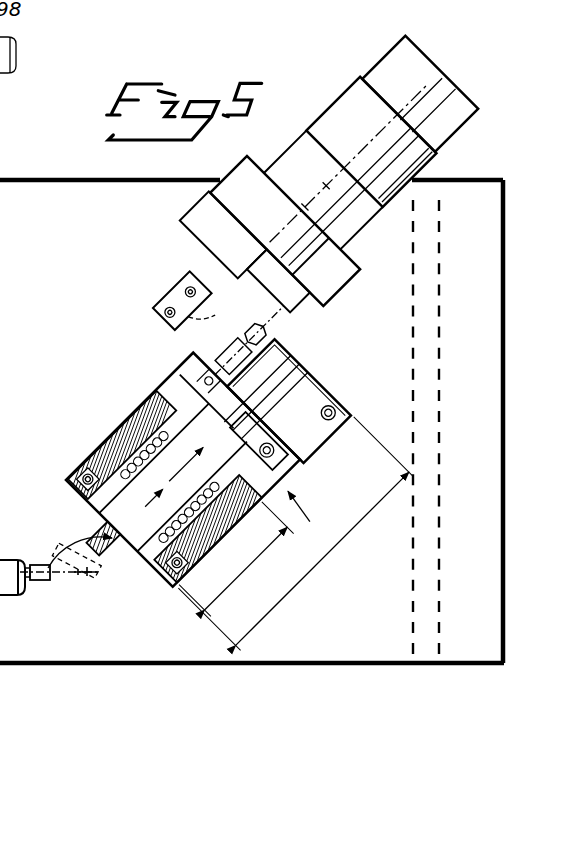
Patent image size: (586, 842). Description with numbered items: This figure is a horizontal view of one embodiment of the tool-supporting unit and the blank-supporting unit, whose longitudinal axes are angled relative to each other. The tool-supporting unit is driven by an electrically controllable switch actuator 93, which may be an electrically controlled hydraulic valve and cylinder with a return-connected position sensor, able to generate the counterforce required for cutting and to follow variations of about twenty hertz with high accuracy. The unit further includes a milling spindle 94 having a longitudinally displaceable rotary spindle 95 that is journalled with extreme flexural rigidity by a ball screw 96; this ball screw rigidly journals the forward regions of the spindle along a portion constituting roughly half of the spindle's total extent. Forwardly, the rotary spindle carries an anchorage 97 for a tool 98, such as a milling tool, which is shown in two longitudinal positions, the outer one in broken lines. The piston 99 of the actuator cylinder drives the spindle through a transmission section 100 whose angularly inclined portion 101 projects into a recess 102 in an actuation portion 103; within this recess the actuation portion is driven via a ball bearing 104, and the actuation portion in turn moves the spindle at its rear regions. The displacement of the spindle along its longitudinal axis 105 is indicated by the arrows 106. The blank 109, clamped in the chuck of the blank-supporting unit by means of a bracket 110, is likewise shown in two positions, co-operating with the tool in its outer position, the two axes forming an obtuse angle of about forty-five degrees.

The switch actuator 93 is at (327, 110).
The milling spindle 94 is at (133, 402).
The rotary spindle 95 is at (140, 556).
The ball screw 96 is at (160, 580).
The anchorage 97 is at (107, 550).
The tool 98 is at (93, 563).
The piston 99 is at (217, 278).
The transmission section 100 is at (160, 290).
The angularly inclined portion 101 is at (193, 353).
The recess 102 is at (193, 357).
The actuation portion 103 is at (312, 373).
The ball bearing 104 is at (250, 358).
The longitudinal axis 105 is at (89, 457).
The arrows 106 is at (150, 500).
The blank 109 is at (38, 564).
The bracket 110 is at (27, 596).